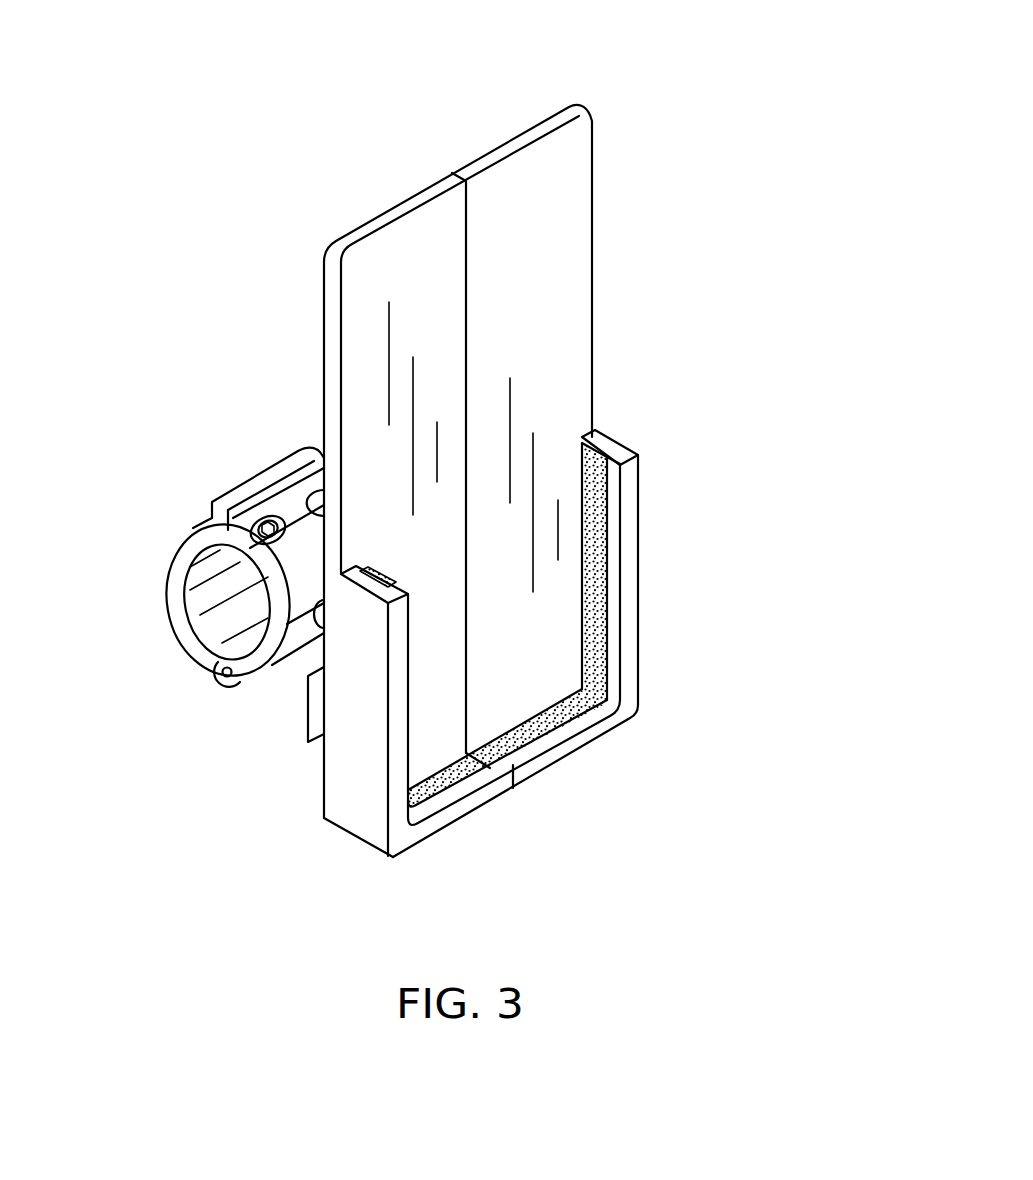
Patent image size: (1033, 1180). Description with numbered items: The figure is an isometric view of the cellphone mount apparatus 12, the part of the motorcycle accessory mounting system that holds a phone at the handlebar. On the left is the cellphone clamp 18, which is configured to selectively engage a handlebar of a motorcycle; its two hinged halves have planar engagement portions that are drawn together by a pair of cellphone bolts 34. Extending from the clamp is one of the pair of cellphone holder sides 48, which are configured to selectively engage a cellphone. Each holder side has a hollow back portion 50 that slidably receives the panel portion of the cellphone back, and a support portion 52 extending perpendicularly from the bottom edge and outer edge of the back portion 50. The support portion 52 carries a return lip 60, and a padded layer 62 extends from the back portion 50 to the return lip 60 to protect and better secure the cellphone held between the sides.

The cellphone mount apparatus 12 is at (710, 112).
The cellphone clamp 18 is at (243, 683).
The cellphone bolts 34 is at (319, 487).
The cellphone holder sides 48 is at (503, 197).
The back portion 50 is at (548, 332).
The support portion 52 is at (636, 545).
The return lip 60 is at (543, 745).
The padded layer 62 is at (594, 628).